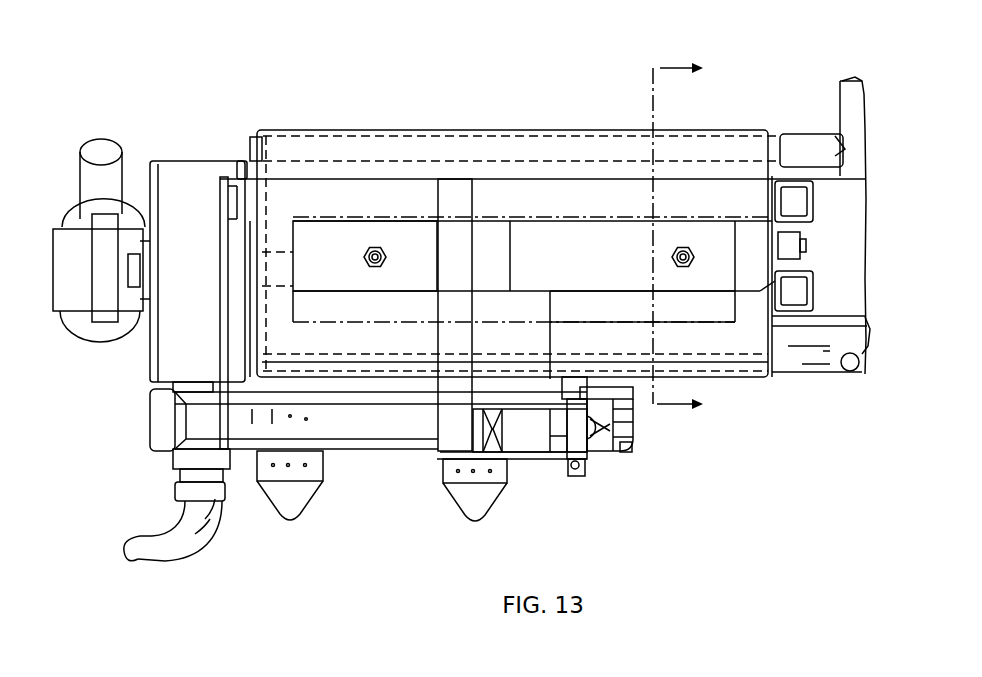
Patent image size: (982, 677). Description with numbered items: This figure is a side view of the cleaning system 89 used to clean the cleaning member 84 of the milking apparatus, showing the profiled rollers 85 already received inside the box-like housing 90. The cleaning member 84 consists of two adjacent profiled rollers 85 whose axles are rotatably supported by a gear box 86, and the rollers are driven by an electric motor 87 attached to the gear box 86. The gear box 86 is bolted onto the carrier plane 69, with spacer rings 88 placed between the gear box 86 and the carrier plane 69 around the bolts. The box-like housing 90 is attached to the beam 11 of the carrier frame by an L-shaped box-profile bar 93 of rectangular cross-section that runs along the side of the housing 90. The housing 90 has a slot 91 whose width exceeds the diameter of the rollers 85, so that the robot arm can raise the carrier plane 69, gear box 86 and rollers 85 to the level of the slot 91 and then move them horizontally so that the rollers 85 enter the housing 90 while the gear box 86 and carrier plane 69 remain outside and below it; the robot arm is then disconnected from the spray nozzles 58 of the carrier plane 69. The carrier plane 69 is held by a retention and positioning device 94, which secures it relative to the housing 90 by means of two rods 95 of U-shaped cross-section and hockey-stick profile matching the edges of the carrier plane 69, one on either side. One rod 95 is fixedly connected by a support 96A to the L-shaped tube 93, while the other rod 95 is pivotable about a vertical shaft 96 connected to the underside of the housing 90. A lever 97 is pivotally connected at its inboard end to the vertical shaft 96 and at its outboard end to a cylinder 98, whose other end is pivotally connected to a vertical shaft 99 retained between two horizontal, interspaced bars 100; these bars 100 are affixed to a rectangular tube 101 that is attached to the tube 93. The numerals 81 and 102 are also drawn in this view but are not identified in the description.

The beam 11 is at (848, 85).
The spray nozzles 58 is at (282, 508).
The carrier plane 69 is at (152, 422).
The hose fitting 81 is at (173, 465).
The cleaning member 84 is at (220, 155).
The profiled rollers 85 is at (408, 306).
The gear box 86 is at (190, 160).
The electric motor 87 is at (100, 148).
The spacer rings 88 is at (197, 382).
The cleaning system 89 is at (385, 104).
The box-like housing 90 is at (404, 132).
The slot 91 is at (266, 234).
The L-shaped box-profile bar 93 is at (637, 203).
The retention and positioning device 94 is at (639, 437).
The rods 95 is at (348, 423).
The vertical shaft 96 is at (575, 483).
The support 96A is at (382, 197).
The lever 97 is at (605, 392).
The cylinder 98 is at (598, 452).
The vertical shaft 99 is at (583, 473).
The bars 100 is at (528, 461).
The tube 101 is at (455, 264).
The cover 102 is at (500, 152).